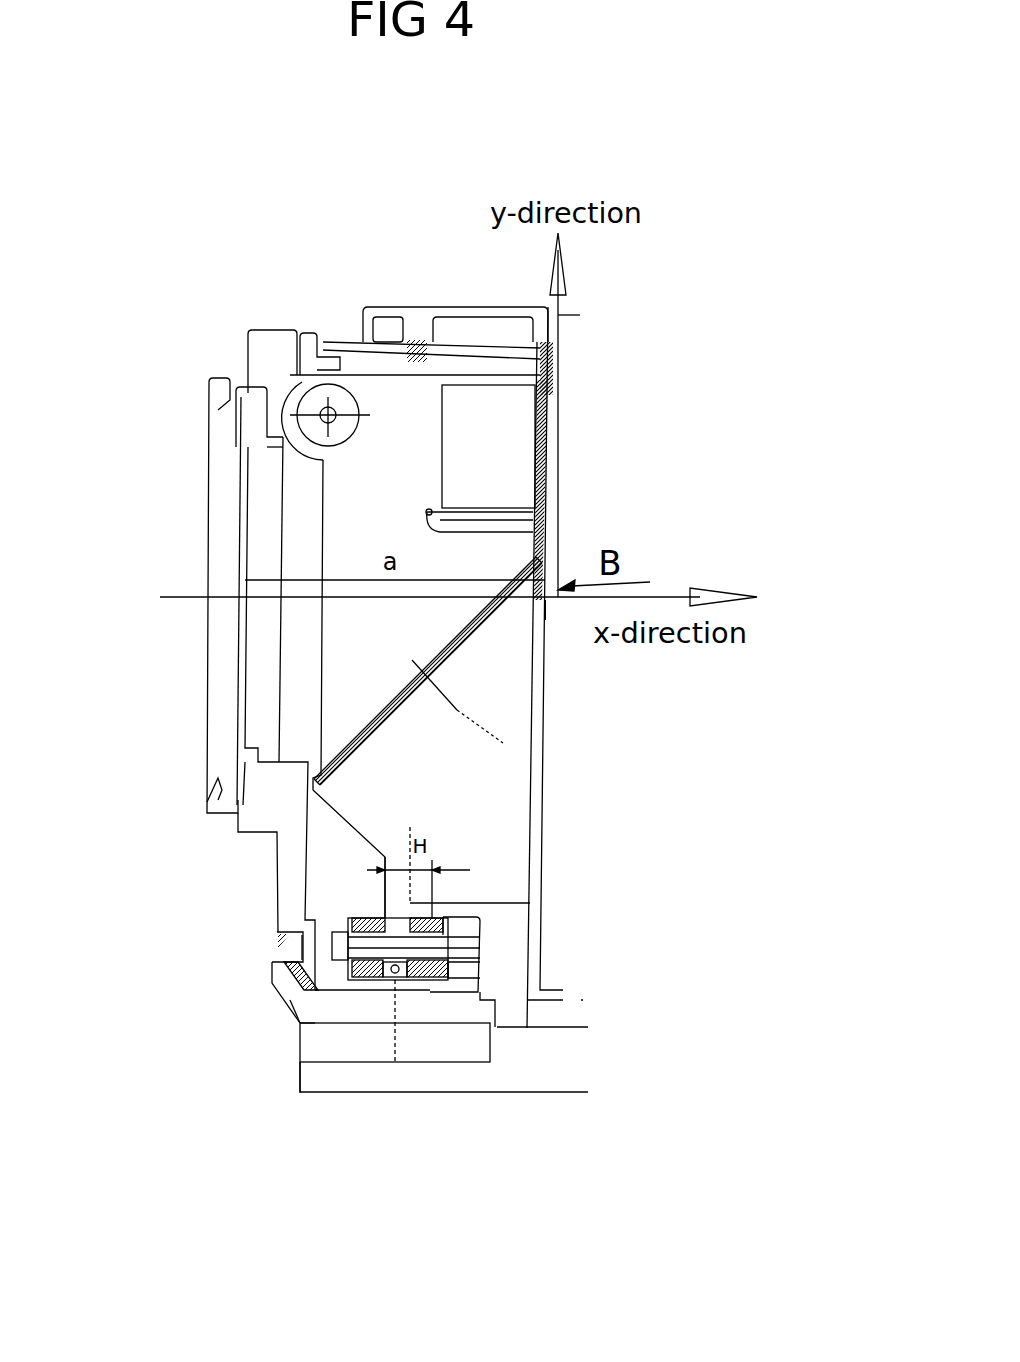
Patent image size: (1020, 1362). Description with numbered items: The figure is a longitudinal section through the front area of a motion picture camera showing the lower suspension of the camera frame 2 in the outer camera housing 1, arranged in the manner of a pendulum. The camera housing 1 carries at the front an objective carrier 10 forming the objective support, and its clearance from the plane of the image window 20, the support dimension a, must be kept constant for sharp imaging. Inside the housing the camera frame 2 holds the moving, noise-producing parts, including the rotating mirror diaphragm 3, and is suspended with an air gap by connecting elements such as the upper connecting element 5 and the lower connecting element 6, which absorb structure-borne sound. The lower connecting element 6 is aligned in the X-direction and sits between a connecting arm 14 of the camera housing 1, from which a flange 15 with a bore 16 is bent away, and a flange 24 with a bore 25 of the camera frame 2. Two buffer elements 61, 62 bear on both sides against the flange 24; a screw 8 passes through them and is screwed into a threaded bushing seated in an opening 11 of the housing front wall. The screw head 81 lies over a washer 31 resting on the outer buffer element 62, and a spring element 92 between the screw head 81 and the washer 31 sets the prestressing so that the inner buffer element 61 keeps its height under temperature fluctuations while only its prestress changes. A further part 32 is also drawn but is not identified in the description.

The camera housing 1 is at (278, 878).
The camera frame 2 is at (400, 393).
The rotating mirror diaphragm 3 is at (383, 717).
The connecting element 5 is at (325, 410).
The lower connecting element 6 is at (581, 1000).
The screw 8 is at (392, 1093).
The objective carrier 10 is at (240, 499).
The opening 11 is at (295, 975).
The connecting arm 14 is at (362, 1010).
The flange 15 is at (470, 985).
The bore 16 is at (485, 937).
The image window 20 is at (550, 607).
The flange 24 is at (405, 978).
The bore 25 is at (400, 978).
The washer 31 is at (303, 1080).
The clamping jaw 32 is at (285, 944).
The buffer element 61 is at (440, 917).
The buffer element 62 is at (362, 918).
The screw head 81 is at (290, 1005).
The spring element 92 is at (300, 1030).